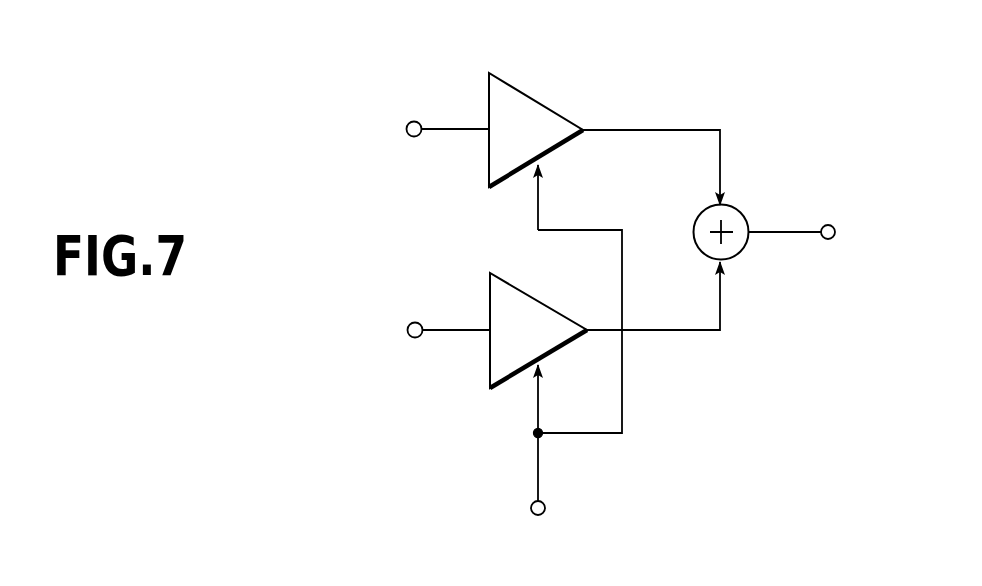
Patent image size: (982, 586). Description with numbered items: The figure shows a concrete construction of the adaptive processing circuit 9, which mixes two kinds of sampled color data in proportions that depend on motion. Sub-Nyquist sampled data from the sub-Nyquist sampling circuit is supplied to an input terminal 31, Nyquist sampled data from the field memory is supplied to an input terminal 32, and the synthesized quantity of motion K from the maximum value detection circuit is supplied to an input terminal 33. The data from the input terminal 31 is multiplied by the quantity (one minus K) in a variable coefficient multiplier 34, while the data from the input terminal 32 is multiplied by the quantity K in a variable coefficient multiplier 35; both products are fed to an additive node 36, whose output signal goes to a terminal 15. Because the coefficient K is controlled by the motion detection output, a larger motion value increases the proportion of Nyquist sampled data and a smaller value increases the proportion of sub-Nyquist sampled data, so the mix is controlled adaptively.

The adaptive processing circuit 9 is at (662, 120).
The input terminal 31 is at (410, 122).
The input terminal 32 is at (410, 338).
The input terminal 33 is at (545, 508).
The variable coefficient multiplier 34 is at (535, 107).
The variable coefficient multiplier 35 is at (490, 375).
The additive node 36 is at (737, 218).
The terminal 15 is at (825, 240).